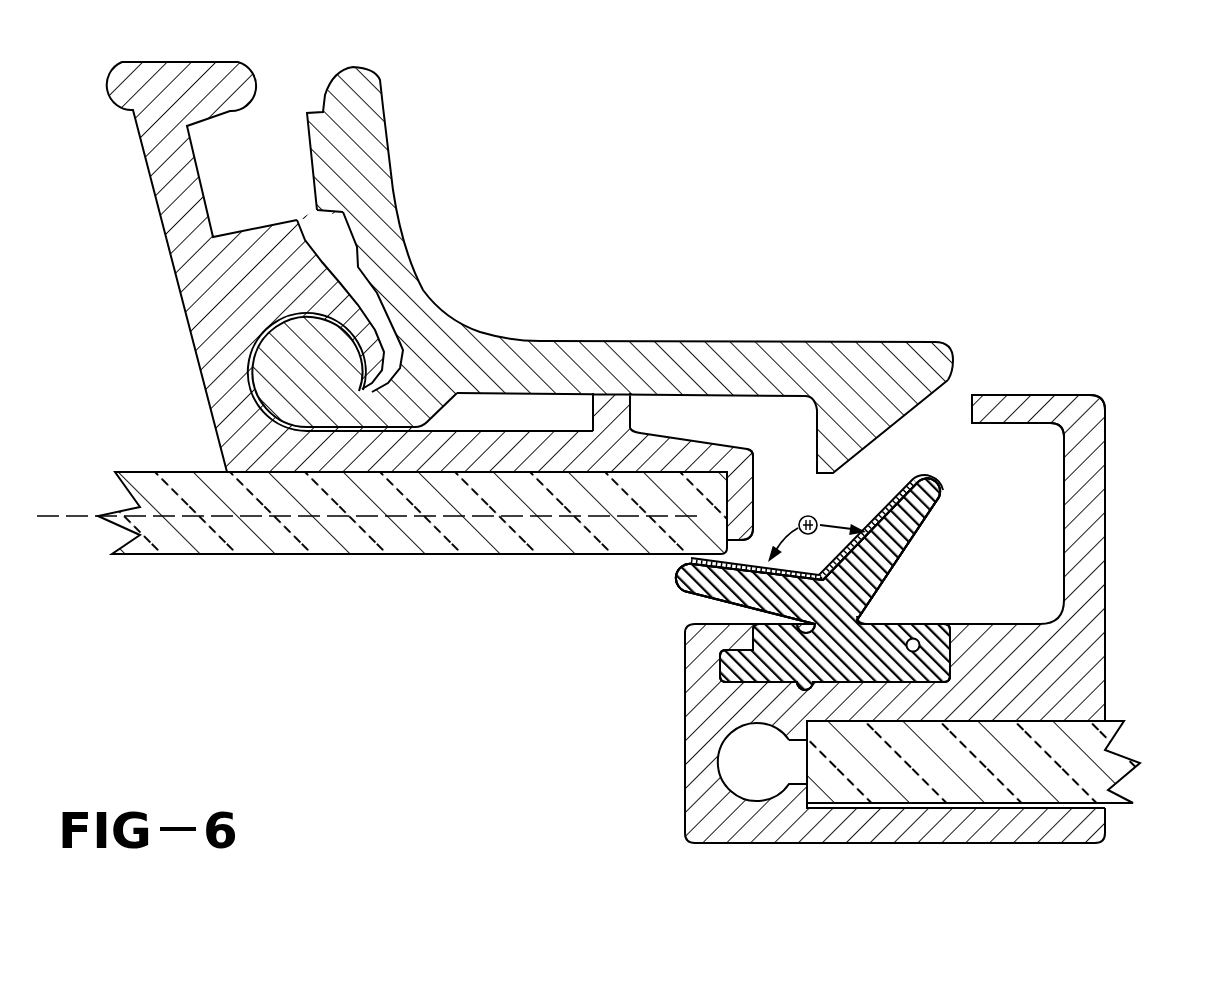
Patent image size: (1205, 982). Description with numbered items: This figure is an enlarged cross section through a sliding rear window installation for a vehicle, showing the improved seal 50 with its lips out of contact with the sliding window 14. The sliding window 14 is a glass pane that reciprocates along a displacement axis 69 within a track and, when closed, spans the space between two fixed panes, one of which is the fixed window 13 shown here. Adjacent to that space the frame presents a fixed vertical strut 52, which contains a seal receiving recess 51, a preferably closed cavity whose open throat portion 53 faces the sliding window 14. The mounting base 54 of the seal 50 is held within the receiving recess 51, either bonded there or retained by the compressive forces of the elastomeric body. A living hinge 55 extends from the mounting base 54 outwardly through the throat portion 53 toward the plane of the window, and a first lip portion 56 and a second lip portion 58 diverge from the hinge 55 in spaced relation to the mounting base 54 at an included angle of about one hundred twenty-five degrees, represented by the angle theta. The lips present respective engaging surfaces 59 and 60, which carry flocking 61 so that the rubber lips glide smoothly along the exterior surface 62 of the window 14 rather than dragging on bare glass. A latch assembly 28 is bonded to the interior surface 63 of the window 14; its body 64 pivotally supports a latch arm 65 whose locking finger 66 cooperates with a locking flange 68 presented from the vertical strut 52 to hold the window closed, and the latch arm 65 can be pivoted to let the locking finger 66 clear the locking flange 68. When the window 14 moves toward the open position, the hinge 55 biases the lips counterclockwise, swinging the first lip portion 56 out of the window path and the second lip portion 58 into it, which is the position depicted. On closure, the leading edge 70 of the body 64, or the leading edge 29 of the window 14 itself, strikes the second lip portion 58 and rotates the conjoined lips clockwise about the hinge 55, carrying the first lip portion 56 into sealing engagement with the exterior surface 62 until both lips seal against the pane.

The fixed window 13 is at (1125, 755).
The sliding window 14 is at (297, 540).
The latch assembly 28 is at (436, 294).
The leading edge of the window 29 is at (727, 527).
The seal 50 is at (793, 608).
The seal receiving recess 51 is at (802, 682).
The vertical strut 52 is at (914, 852).
The throat portion 53 is at (920, 649).
The mounting base 54 is at (770, 655).
The hinge 55 is at (853, 620).
The first lip portion 56 is at (683, 585).
The second lip portion 58 is at (928, 494).
The engaging surface 59 is at (723, 553).
The engaging surface 60 is at (895, 498).
The flocking 61 is at (880, 572).
The exterior surface 62 is at (463, 555).
The interior surface 63 is at (158, 472).
The body 64 is at (532, 447).
The latch arm 65 is at (666, 360).
The locking finger 66 is at (843, 437).
The locking flange 68 is at (1088, 525).
The displacement axis 69 is at (70, 518).
The leading edge of the body 70 is at (753, 477).